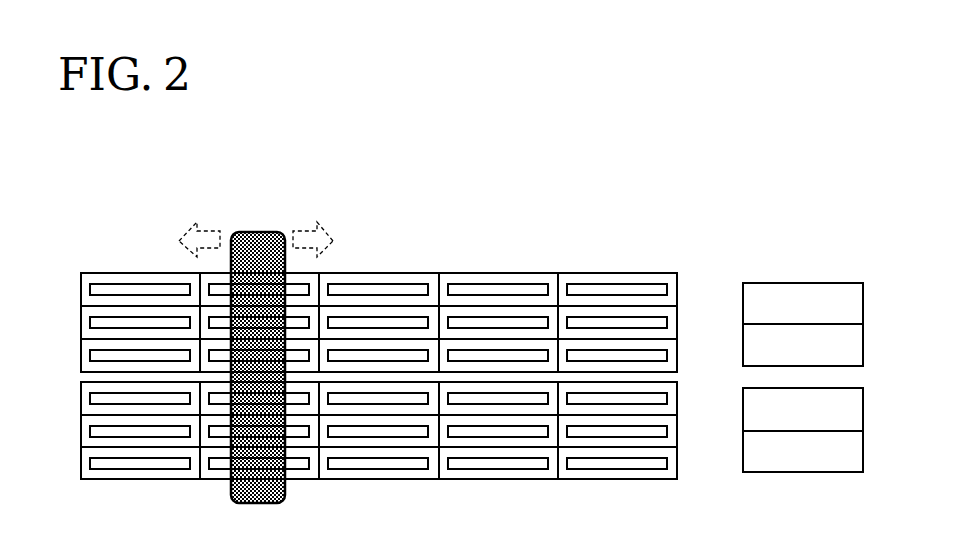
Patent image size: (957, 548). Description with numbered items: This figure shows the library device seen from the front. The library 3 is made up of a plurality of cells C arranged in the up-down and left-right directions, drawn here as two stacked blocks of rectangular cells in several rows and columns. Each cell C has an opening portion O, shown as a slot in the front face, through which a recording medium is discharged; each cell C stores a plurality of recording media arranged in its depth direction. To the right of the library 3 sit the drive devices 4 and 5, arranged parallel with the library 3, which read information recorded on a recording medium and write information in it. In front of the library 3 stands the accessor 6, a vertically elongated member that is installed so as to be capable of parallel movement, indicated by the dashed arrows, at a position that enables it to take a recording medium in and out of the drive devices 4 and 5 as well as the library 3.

The library 3 is at (405, 273).
The opening portion O is at (106, 281).
The cell C is at (72, 273).
The accessor 6 is at (259, 232).
The drive device 4 is at (863, 406).
The drive device 5 is at (863, 451).